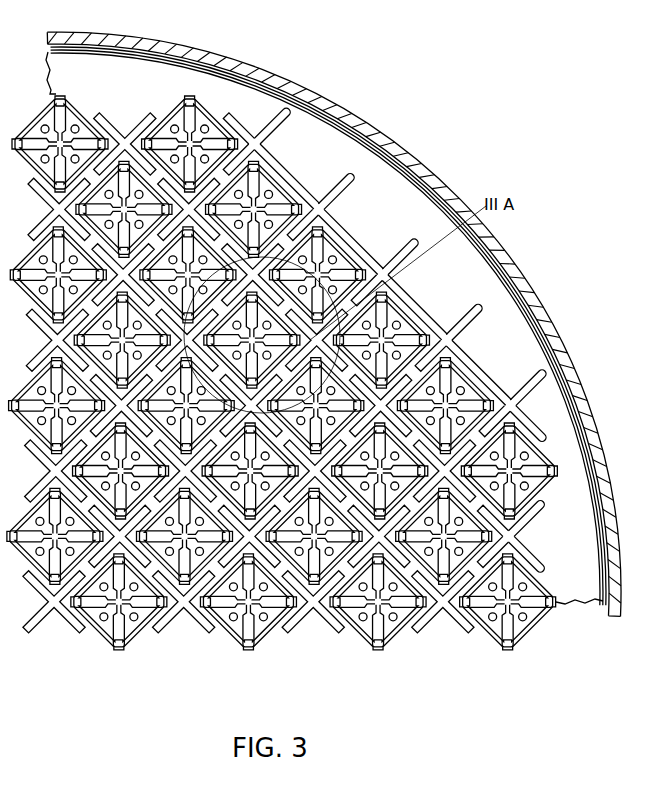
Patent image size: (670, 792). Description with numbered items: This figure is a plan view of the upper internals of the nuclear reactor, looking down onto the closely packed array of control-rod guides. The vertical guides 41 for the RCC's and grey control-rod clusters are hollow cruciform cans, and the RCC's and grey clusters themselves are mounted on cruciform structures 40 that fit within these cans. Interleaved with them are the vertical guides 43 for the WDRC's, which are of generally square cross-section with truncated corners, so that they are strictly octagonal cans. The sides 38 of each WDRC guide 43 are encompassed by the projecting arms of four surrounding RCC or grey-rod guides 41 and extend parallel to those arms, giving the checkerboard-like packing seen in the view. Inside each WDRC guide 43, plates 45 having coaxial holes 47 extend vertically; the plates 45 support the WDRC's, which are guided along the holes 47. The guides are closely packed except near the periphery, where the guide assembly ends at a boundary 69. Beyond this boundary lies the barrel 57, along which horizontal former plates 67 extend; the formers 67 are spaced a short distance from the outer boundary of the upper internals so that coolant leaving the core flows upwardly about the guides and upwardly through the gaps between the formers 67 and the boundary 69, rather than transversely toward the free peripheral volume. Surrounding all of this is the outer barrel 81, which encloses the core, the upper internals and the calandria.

The sides of WDRC guide 38 is at (173, 195).
The cruciform structure 40 is at (197, 618).
The vertical guide for RCC's and grey control-rod clusters 41 is at (545, 415).
The vertical guide for WDRC's 43 is at (402, 637).
The plate 45 is at (377, 604).
The coaxial hole 47 is at (252, 622).
The barrel 57 is at (501, 244).
The former plate 67 is at (402, 207).
The boundary of the guide assembly 69 is at (410, 245).
The outer barrel 81 is at (538, 300).